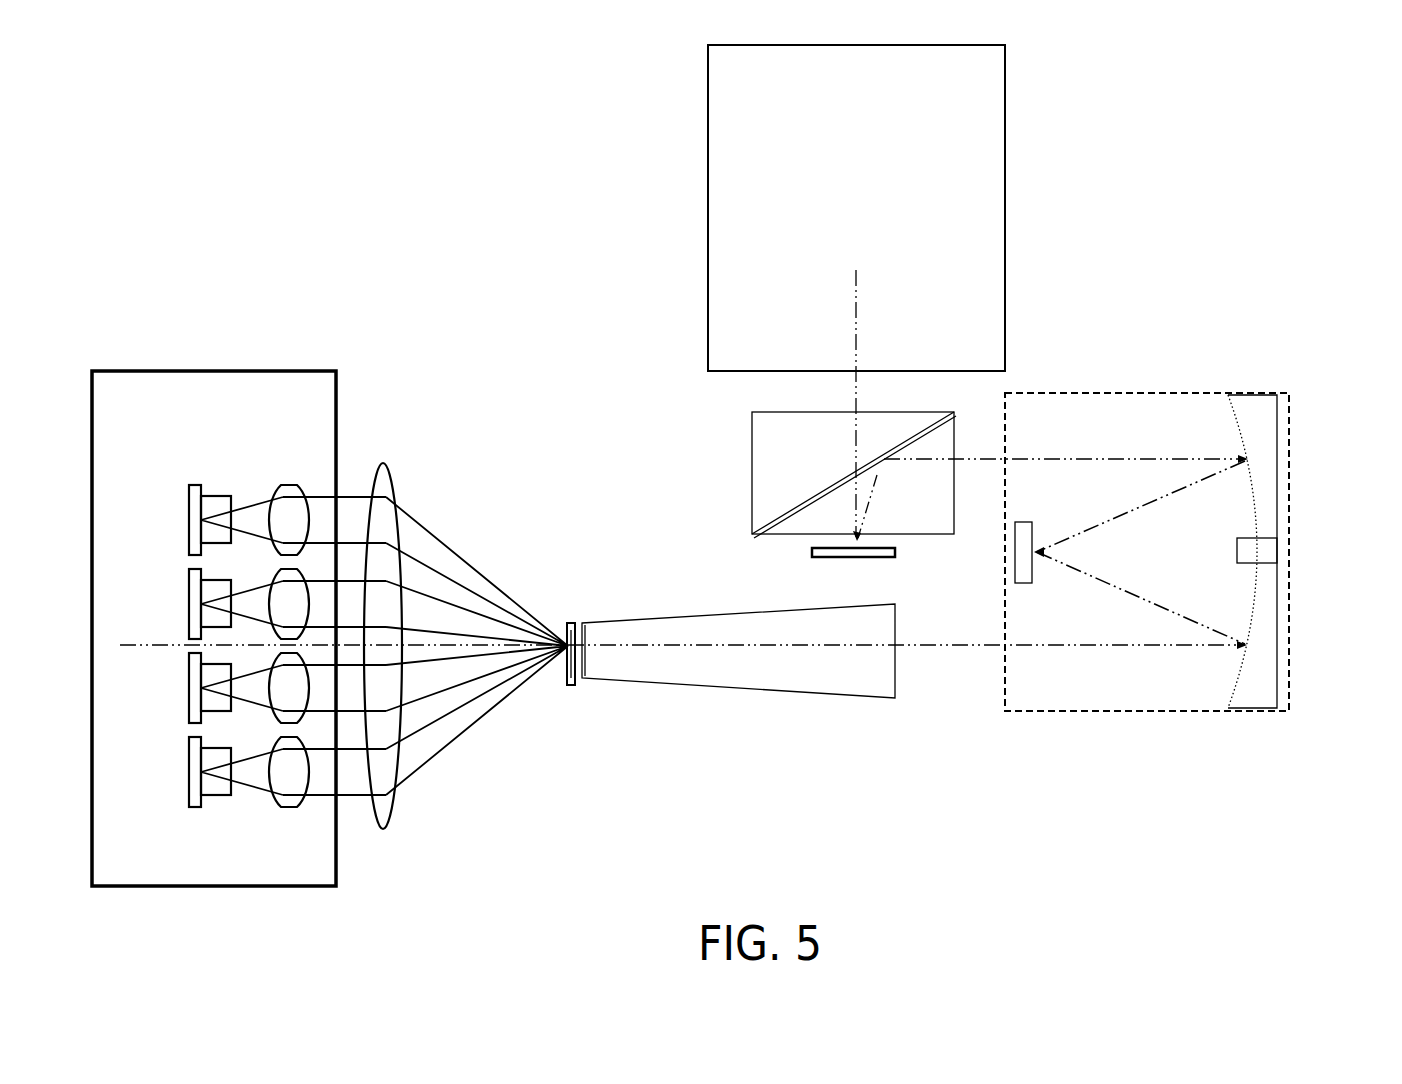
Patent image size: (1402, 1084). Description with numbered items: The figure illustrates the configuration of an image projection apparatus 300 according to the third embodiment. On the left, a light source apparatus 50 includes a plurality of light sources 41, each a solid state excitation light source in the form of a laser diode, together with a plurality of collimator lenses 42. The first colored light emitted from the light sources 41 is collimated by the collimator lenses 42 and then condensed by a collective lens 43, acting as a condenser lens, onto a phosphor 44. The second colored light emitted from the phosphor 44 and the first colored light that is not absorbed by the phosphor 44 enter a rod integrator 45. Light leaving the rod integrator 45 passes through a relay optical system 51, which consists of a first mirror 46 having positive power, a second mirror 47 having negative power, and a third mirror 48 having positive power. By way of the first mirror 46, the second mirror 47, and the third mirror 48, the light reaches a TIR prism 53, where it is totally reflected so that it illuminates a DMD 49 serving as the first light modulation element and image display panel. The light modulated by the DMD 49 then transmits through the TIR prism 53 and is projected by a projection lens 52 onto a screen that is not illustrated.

The image projection apparatus 300 is at (1219, 88).
The light sources 41 is at (189, 495).
The collimator lenses 42 is at (281, 493).
The collective lens 43 is at (388, 490).
The phosphor 44 is at (568, 676).
The rod integrator 45 is at (793, 670).
The first mirror 46 is at (1267, 640).
The second mirror 47 is at (1025, 552).
The third mirror 48 is at (1267, 422).
The DMD 49 is at (830, 556).
The light source apparatus 50 is at (288, 370).
The relay optical system 51 is at (1292, 540).
The projection lens 52 is at (978, 211).
The TIR prism 53 is at (766, 469).